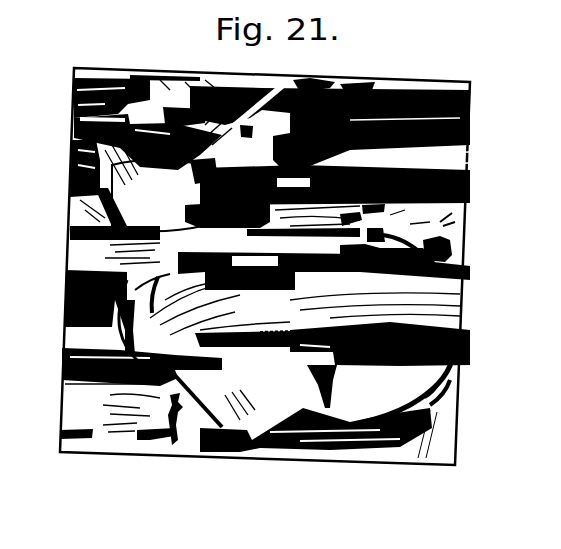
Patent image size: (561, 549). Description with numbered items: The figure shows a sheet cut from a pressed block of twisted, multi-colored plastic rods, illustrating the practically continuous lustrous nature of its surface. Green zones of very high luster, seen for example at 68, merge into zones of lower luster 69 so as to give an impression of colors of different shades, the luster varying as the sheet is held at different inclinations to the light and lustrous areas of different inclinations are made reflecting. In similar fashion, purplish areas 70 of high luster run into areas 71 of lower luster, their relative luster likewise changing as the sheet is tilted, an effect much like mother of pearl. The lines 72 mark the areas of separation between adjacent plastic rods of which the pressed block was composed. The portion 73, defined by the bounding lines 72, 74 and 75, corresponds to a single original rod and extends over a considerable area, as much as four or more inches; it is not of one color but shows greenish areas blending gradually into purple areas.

The green zone of very high luster 68 is at (142, 191).
The zone of lower luster 69 is at (197, 197).
The purplish area of high luster 70 is at (98, 330).
The area of lower luster 71 is at (67, 372).
The line 72 is at (273, 366).
The portion 73 is at (245, 319).
The bounding line 74 is at (103, 288).
The bounding line 75 is at (367, 238).